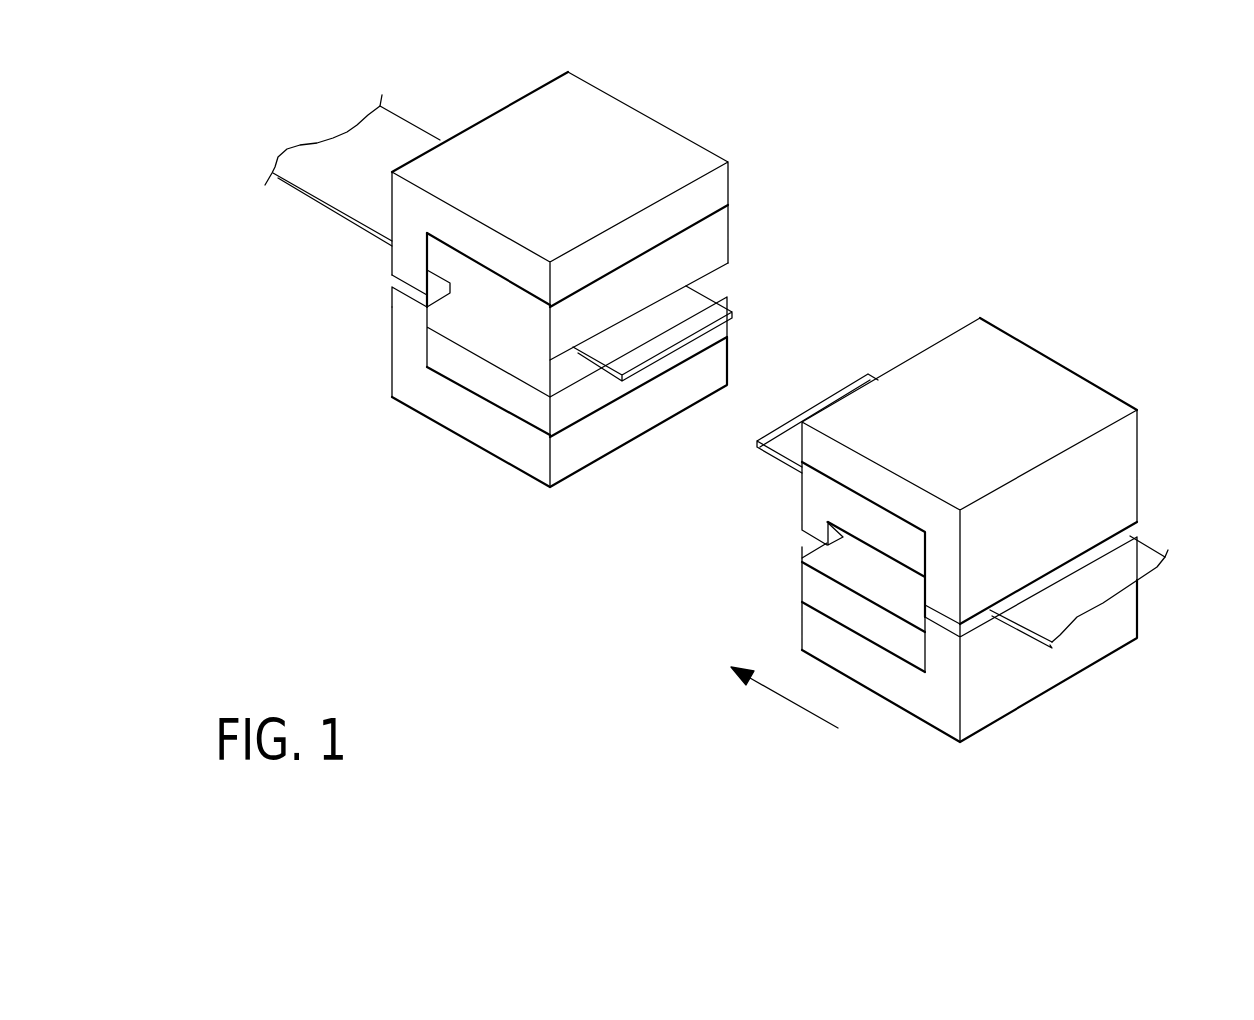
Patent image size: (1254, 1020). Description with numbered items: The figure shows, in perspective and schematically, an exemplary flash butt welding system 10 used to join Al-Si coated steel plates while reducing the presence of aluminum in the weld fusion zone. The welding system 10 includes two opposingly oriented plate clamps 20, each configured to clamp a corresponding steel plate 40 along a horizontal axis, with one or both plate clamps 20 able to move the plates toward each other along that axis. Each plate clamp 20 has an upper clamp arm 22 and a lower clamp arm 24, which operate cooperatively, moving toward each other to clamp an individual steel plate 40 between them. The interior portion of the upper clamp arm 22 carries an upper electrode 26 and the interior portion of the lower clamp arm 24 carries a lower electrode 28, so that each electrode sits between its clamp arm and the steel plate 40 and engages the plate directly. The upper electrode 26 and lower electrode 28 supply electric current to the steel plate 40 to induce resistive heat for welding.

The flash butt welding system 10 is at (1023, 163).
The plate clamp 20 is at (447, 486).
The upper clamp arm 22 is at (645, 125).
The lower clamp arm 24 is at (595, 443).
The upper electrode 26 is at (712, 245).
The lower electrode 28 is at (482, 378).
The steel plate 40 is at (307, 203).